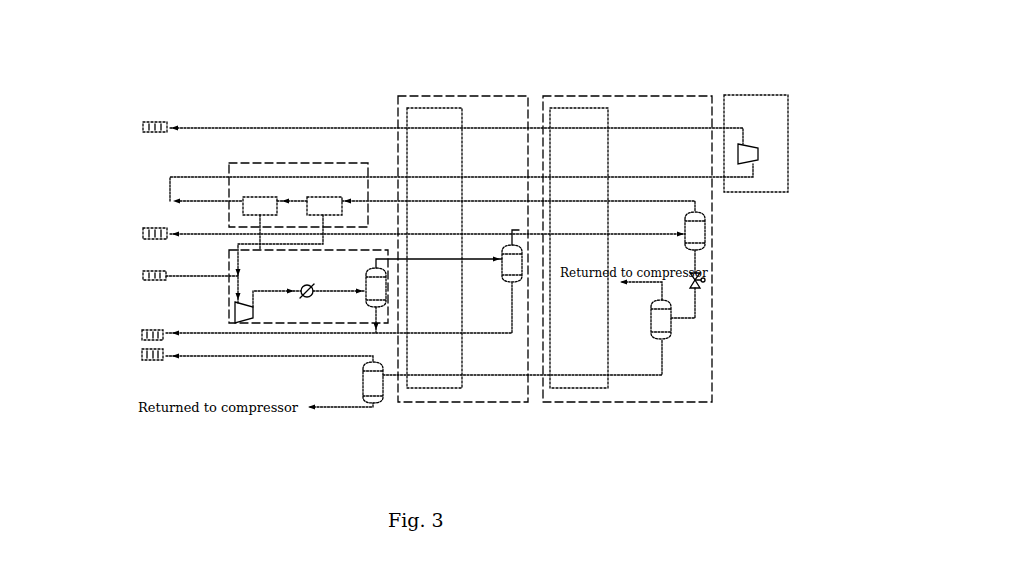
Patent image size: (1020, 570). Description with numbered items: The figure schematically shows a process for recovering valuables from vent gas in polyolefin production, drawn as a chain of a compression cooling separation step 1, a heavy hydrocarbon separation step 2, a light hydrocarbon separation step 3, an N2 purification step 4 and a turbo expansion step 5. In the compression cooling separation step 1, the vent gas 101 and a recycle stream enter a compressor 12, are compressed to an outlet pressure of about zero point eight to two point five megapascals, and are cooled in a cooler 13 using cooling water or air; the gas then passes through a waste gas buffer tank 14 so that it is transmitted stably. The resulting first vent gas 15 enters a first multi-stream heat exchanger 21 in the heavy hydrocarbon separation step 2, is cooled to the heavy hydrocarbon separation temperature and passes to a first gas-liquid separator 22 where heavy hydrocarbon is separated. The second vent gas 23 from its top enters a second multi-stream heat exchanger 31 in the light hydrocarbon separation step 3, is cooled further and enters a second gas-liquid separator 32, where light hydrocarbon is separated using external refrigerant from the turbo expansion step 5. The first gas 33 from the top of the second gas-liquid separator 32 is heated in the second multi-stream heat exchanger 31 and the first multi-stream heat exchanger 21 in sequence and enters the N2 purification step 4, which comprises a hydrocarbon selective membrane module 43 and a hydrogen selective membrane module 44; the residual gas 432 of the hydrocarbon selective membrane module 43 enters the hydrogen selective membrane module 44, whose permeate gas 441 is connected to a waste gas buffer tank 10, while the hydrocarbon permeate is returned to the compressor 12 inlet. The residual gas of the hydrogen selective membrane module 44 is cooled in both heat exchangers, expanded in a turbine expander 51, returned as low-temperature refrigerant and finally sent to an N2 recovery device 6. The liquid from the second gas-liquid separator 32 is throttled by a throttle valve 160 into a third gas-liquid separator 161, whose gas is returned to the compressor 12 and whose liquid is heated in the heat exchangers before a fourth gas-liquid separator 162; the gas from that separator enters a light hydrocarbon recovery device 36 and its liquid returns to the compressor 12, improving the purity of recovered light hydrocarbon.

The compression cooling separation step 1 is at (267, 312).
The heavy hydrocarbon separation step 2 is at (487, 387).
The first multi-stream heat exchanger 21 is at (427, 385).
The light hydrocarbon separation step 3 is at (684, 382).
The second multi-stream heat exchanger 31 is at (572, 380).
The N2 purification step 4 is at (238, 169).
The hydrocarbon selective membrane module 43 is at (330, 199).
The residual gas of the hydrocarbon selective membrane module 432 is at (293, 199).
The hydrogen selective membrane module 44 is at (265, 199).
The permeate gas of the hydrogen selective membrane module 441 is at (260, 222).
The turbo expansion step 5 is at (780, 130).
The turbine expander 51 is at (757, 155).
The N2 recovery device 6 is at (145, 121).
The waste gas buffer tank 10 is at (143, 229).
The vent gas 101 is at (142, 276).
The compressor 12 is at (237, 323).
The cooler 13 is at (300, 297).
The waste gas buffer tank 14 is at (377, 272).
The first vent gas 15 is at (390, 261).
The first gas-liquid separator 22 is at (507, 248).
The second vent gas 23 is at (519, 230).
The second gas-liquid separator / heavy hydrocarbon recovery device 32 is at (143, 333).
The first gas 33 is at (657, 202).
The light hydrocarbon recovery device 36 is at (143, 360).
The throttle valve 160 is at (705, 279).
The third gas-liquid separator 161 is at (662, 328).
The fourth gas-liquid separator 162 is at (373, 393).